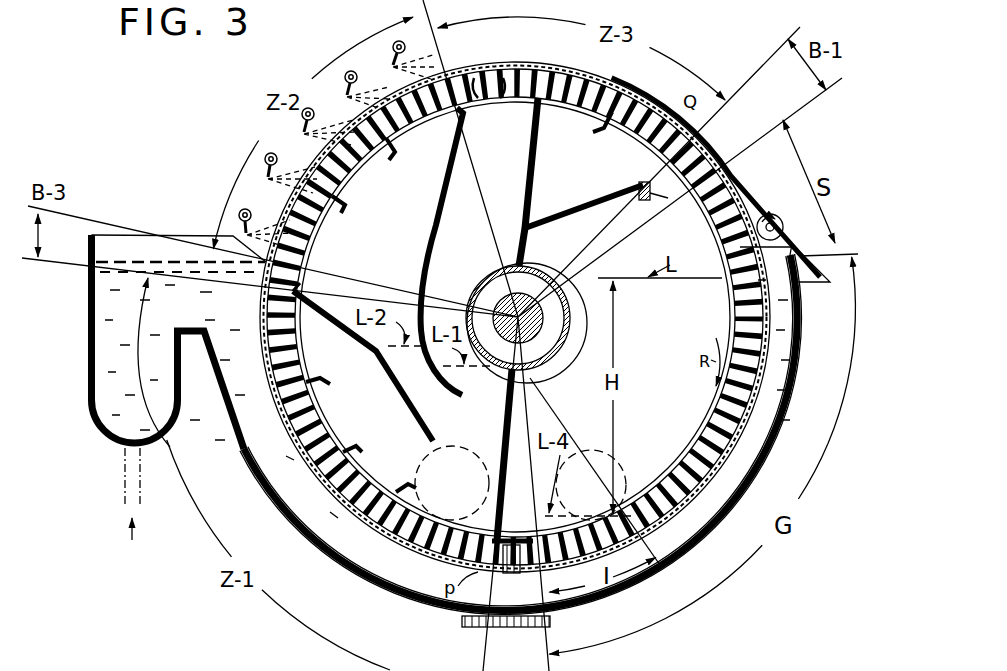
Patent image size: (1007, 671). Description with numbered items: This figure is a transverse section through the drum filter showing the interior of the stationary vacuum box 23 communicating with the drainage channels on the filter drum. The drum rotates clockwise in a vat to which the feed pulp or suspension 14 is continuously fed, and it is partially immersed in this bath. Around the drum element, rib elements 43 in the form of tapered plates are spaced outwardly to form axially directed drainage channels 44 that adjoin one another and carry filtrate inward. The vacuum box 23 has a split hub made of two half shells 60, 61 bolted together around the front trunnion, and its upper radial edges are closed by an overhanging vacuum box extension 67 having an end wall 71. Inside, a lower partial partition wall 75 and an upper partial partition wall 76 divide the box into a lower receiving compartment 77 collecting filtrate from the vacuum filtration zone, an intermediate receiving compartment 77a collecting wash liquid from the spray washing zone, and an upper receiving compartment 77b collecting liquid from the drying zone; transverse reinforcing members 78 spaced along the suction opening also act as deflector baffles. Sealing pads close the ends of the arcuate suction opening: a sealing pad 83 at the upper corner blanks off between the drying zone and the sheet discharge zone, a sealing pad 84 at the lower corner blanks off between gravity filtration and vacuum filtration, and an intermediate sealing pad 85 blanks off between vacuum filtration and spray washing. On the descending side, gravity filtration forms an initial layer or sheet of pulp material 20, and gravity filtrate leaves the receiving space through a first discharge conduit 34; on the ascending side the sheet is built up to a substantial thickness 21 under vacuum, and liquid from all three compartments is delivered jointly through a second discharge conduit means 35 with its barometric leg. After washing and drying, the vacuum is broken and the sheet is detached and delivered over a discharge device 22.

The feed pulp or suspension 14 is at (124, 483).
The layer or sheet of pulp material 20 is at (692, 524).
The substantial thickness 21 is at (222, 236).
The discharge device 22 is at (780, 213).
The vacuum box 23 is at (508, 414).
The first discharge conduit 34 is at (614, 500).
The second discharge conduit means 35 is at (484, 447).
The rib elements 43 is at (501, 99).
The drainage channels 44 is at (612, 93).
The half shell 60 is at (500, 271).
The half shell 61 is at (556, 277).
The vacuum box extension 67 is at (646, 200).
The end wall 71 is at (603, 193).
The lower partial partition wall 75 is at (342, 318).
The upper partial partition wall 76 is at (456, 142).
The lower receiving compartment 77 is at (361, 435).
The intermediate receiving compartment 77a is at (372, 208).
The upper receiving compartment 77b is at (565, 182).
The transverse reinforcing members 78 is at (393, 160).
The sealing pad 83 is at (702, 153).
The sealing pad 84 is at (513, 574).
The sealing pad 85 is at (300, 283).